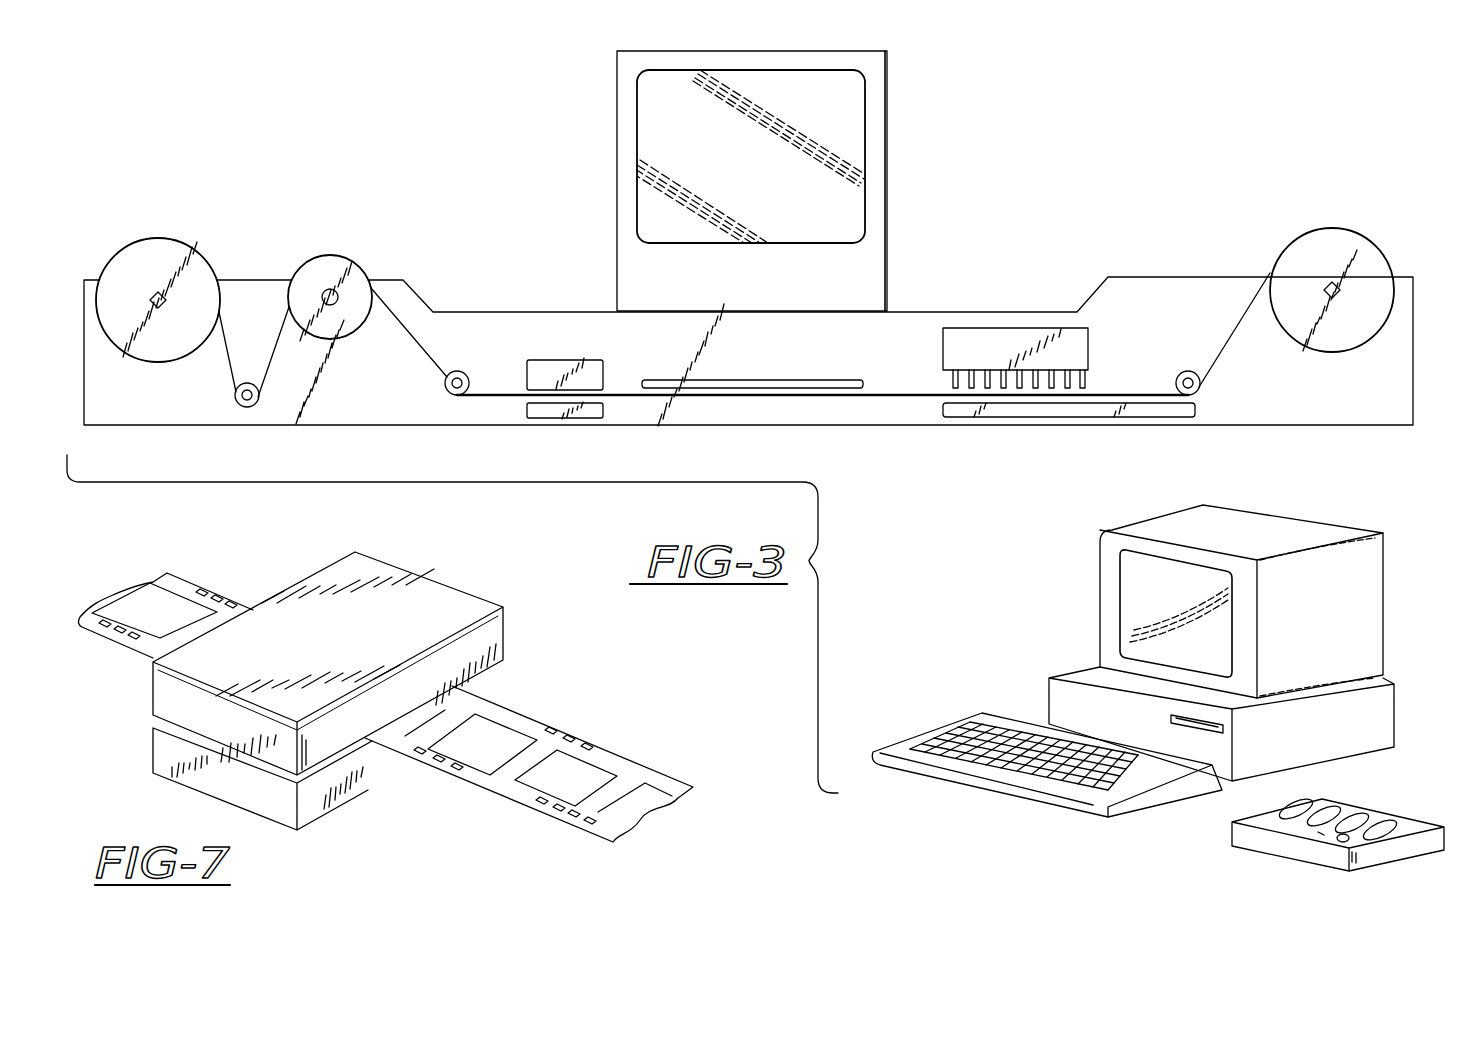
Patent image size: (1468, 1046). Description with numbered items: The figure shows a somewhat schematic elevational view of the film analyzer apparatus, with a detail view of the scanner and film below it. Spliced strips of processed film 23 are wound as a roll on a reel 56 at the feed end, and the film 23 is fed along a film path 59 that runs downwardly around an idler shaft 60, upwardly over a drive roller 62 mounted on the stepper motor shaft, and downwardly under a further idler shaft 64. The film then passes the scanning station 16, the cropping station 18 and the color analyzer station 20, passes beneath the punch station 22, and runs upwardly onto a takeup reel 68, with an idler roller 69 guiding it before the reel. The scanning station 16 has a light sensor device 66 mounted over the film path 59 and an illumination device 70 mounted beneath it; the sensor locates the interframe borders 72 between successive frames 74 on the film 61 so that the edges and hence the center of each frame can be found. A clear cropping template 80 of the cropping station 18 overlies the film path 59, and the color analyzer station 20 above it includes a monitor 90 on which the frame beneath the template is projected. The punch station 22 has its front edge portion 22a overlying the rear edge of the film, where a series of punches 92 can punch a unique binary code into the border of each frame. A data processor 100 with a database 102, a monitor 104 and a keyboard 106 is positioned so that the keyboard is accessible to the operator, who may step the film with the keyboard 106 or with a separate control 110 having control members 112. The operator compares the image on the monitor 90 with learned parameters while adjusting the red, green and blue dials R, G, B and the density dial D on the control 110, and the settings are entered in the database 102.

In FIG. 3, the scanning station 16 is at (550, 317).
In FIG. 3, the cropping station 18 is at (843, 180).
In FIG. 3, the color analyzer station 20 is at (843, 180).
In FIG. 3, the punch station 22 is at (1036, 296).
In FIG. 3, the front edge portion 22a is at (1068, 338).
In FIG. 3, the film 23 is at (757, 396).
In FIG. 7, the film 23 is at (550, 739).
In FIG. 3, the reel 56 is at (183, 260).
In FIG. 3, the film path 59 is at (408, 367).
In FIG. 3, the idler shaft 60 is at (236, 400).
In FIG. 3, the film 61 is at (278, 358).
In FIG. 7, the film 61 is at (391, 700).
In FIG. 3, the drive roller 62 is at (330, 265).
In FIG. 3, the idler shaft 64 is at (449, 365).
In FIG. 3, the light sensor device 66 is at (585, 362).
In FIG. 7, the light sensor device 66 is at (433, 590).
In FIG. 3, the takeup reel 68 is at (1343, 238).
In FIG. 3, the guide roller 69 is at (1177, 370).
In FIG. 3, the illumination device 70 is at (585, 416).
In FIG. 7, the illumination device 70 is at (363, 777).
In FIG. 7, the interframe borders 72 is at (537, 750).
In FIG. 7, the frames 74 is at (464, 760).
In FIG. 3, the cropping template 80 is at (785, 380).
In FIG. 3, the monitor 90 is at (842, 197).
In FIG. 3, the punches 92 is at (945, 383).
In FIG. 3, the data processor 100 is at (1158, 667).
In FIG. 3, the database 102 is at (1076, 669).
In FIG. 3, the monitor 104 is at (1358, 594).
In FIG. 3, the keyboard 106 is at (957, 720).
In FIG. 3, the control 110 is at (1264, 826).
In FIG. 3, the control members 112 is at (1318, 834).
In FIG. 3, the red dial R is at (1303, 805).
In FIG. 3, the green dial G is at (1357, 818).
In FIG. 3, the blue dial B is at (1368, 830).
In FIG. 3, the density dial D is at (1393, 835).